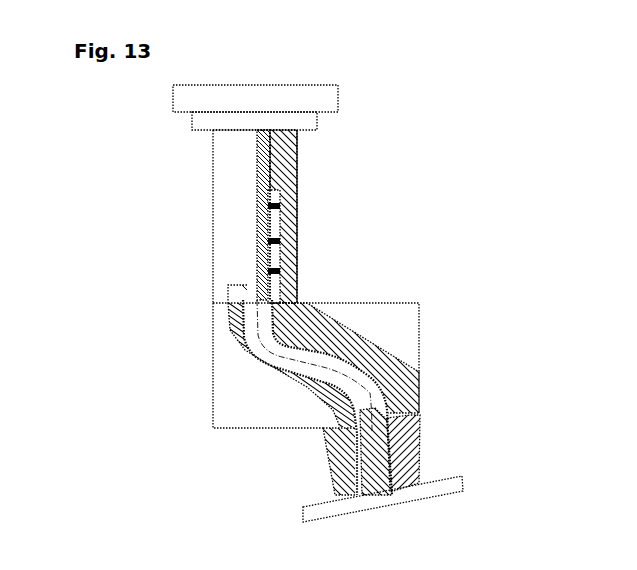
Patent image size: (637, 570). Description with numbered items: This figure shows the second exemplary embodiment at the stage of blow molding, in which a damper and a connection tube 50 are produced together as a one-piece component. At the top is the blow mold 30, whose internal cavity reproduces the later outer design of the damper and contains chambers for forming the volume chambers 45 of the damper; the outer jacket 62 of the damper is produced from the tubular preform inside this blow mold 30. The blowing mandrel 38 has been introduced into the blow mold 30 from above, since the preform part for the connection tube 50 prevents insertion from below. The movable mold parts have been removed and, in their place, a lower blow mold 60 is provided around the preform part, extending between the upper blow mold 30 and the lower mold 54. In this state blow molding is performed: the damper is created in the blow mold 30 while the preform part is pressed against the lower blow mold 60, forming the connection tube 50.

The blow mold 30 is at (287, 153).
The volume chambers 45 is at (296, 192).
The outer jacket 62 is at (278, 203).
The blowing mandrel 38 is at (247, 300).
The connection tube 50 is at (310, 310).
The lower blow mold 60 is at (400, 392).
The lower mold 54 is at (312, 473).